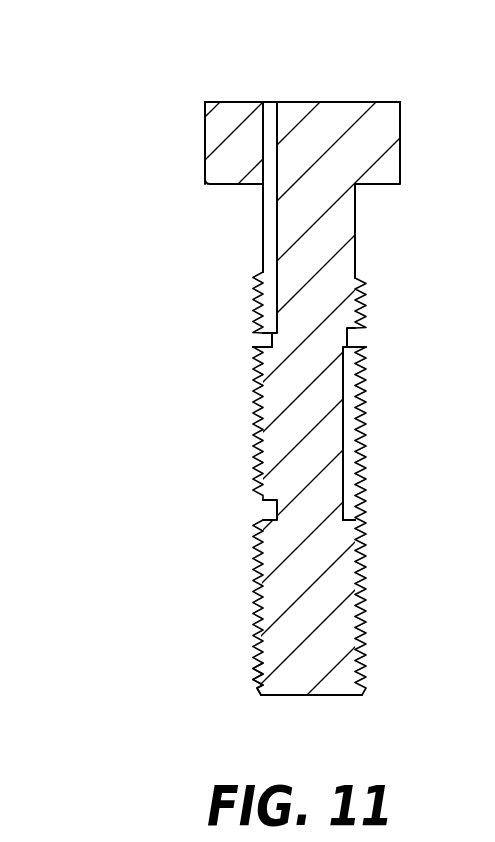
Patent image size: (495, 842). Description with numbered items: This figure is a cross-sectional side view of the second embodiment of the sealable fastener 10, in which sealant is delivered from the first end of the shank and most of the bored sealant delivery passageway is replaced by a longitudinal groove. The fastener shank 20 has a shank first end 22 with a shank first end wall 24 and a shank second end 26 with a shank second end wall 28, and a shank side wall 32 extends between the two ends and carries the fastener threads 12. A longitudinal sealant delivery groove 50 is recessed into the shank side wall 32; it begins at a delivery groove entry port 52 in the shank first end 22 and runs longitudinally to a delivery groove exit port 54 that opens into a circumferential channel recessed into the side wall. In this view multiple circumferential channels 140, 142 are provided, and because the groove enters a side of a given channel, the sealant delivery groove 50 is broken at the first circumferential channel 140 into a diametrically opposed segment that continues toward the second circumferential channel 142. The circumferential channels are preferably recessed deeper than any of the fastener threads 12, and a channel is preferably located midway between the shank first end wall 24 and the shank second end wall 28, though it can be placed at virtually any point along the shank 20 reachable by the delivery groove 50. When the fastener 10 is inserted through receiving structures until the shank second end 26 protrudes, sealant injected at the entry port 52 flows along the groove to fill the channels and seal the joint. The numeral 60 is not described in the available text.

The sealable fastener 10 is at (247, 421).
The fastener threads 12 is at (355, 483).
The fastener shank 20 is at (356, 225).
The shank first end 22 is at (205, 163).
The shank first end wall 24 is at (372, 101).
The shank second end 26 is at (258, 668).
The shank second end wall 28 is at (307, 695).
The shank side wall 32 is at (362, 430).
The longitudinal sealant delivery groove 50 is at (263, 235).
The delivery groove entry port 52 is at (261, 103).
The delivery groove exit port 54 is at (262, 344).
The side surface of head 60 is at (205, 125).
The first circumferential channel 140 is at (352, 338).
The second circumferential channel 142 is at (352, 512).